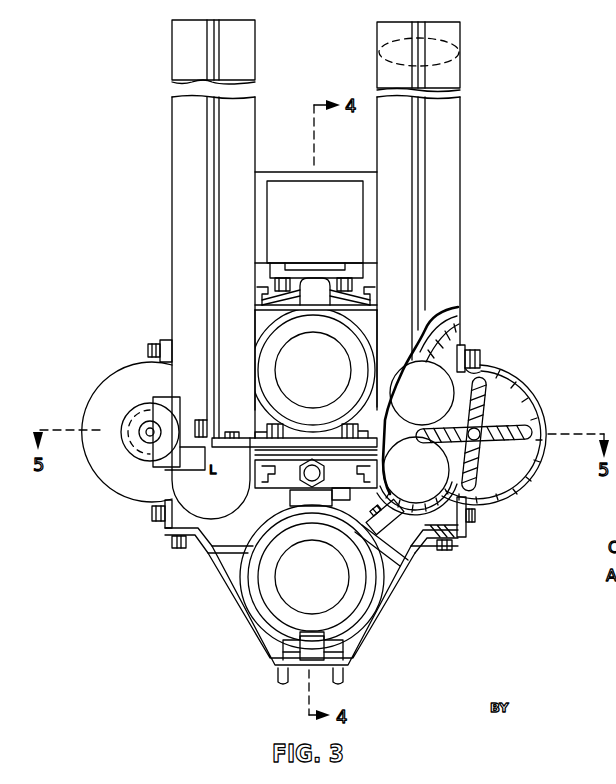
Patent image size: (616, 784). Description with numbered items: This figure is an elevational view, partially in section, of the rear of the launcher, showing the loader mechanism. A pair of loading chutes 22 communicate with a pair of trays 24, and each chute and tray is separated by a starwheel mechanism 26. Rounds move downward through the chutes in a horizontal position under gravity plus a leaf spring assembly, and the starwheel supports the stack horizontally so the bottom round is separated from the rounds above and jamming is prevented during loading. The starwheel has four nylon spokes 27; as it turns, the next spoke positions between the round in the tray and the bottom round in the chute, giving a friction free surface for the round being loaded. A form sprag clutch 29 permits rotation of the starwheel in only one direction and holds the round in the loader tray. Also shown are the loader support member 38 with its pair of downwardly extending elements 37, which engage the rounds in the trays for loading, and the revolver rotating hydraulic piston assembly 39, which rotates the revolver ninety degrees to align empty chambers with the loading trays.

The loading chute 22 is at (185, 52).
The tray 24 is at (188, 492).
The starwheel mechanism 26 is at (500, 463).
The spoke 27 is at (515, 424).
The form sprag clutch 29 is at (152, 448).
The downwardly extending element 37 is at (392, 526).
The loader support member 38 is at (288, 478).
The revolver rotating hydraulic piston assembly 39 is at (342, 493).